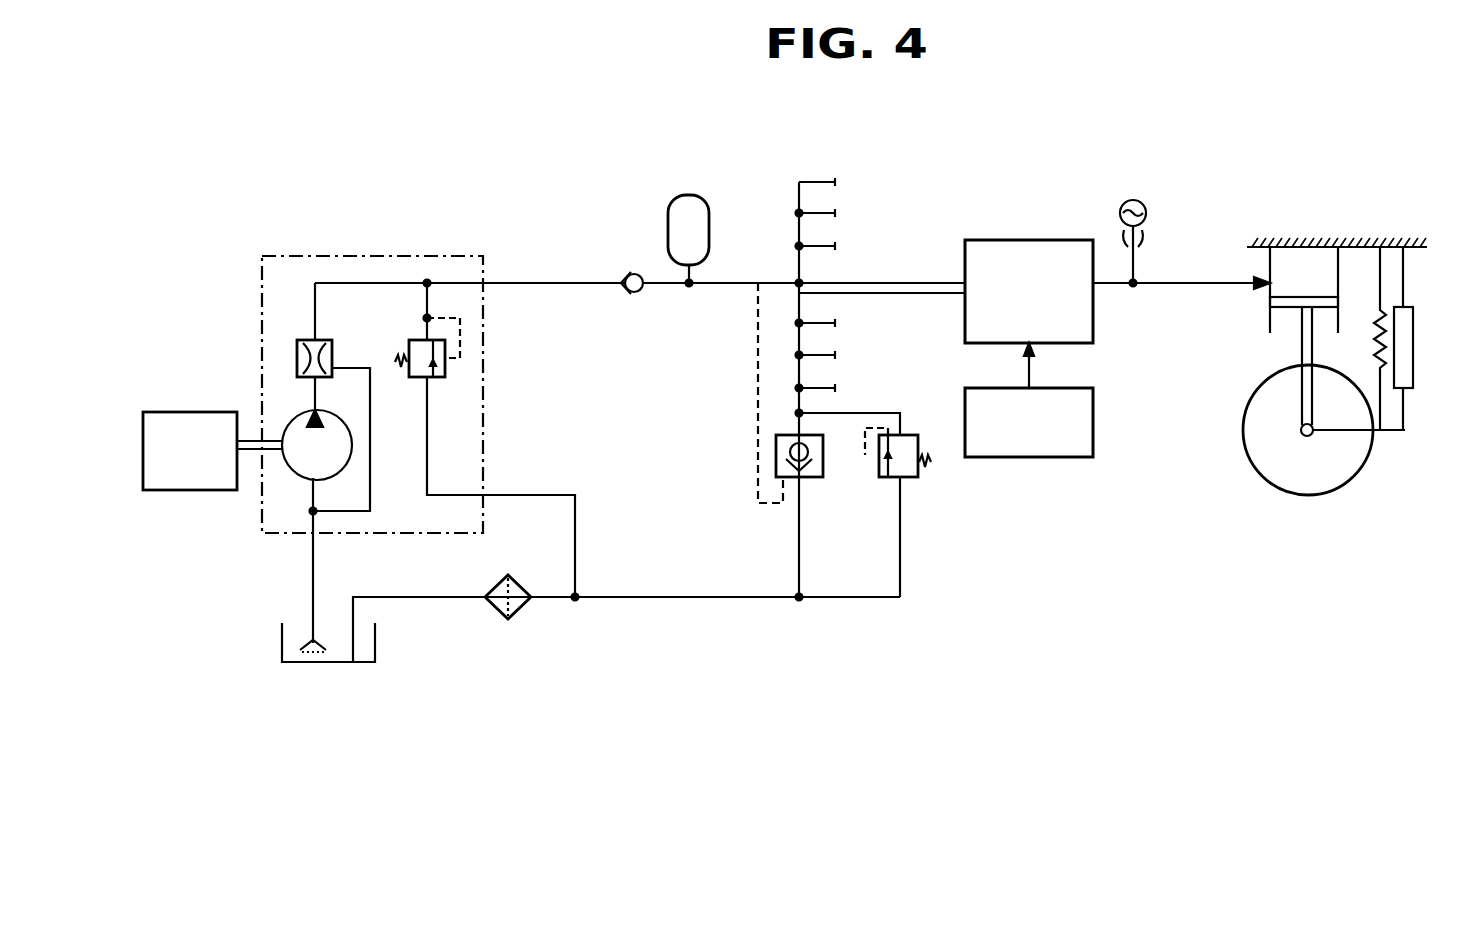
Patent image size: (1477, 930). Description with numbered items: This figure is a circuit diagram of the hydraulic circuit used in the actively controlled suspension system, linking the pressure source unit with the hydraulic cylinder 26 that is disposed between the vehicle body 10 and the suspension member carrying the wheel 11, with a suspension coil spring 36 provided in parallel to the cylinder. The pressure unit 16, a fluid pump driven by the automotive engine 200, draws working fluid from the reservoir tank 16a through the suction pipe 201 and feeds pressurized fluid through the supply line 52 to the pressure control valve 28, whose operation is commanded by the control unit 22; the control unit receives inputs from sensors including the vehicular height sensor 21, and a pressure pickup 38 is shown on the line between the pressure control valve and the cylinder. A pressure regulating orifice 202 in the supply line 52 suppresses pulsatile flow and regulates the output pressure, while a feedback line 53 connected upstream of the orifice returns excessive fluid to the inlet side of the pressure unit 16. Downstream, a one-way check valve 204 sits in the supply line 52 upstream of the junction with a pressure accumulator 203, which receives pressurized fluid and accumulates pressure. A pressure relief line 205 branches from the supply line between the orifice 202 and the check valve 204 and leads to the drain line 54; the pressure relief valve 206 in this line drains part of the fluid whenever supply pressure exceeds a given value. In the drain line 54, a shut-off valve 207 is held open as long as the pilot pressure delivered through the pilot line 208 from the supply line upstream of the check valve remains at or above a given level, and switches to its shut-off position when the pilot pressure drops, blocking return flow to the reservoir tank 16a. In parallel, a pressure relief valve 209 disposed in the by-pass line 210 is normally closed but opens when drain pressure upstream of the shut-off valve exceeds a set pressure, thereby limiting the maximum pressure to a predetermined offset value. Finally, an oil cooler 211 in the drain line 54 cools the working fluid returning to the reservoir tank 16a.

The vehicle body 10 is at (1342, 238).
The wheel 11 is at (1307, 494).
The pressure unit 16 is at (285, 482).
The reservoir tank 16a is at (282, 640).
The vehicular height sensor 21 is at (1413, 325).
The control unit 22 is at (965, 401).
The hydraulic cylinder 26 is at (1270, 295).
The pressure control valve 28 is at (1021, 240).
The suspension coil spring 36 is at (1384, 350).
The pressure gauge line 38 is at (1121, 285).
The supply line 52 is at (521, 283).
The feedback line 53 is at (370, 407).
The drain line 54 is at (720, 598).
The automotive engine 200 is at (190, 412).
The suction pipe 201 is at (313, 577).
The pressure regulating orifice 202 is at (297, 350).
The pressure accumulator 203 is at (707, 216).
The one-way check valve 204 is at (628, 275).
The pressure relief line 205 is at (430, 452).
The pressure relief valve 206 is at (446, 370).
The shut-off valve 207 is at (776, 468).
The pilot line 208 is at (758, 413).
The pressure relief valve 209 is at (910, 480).
The by-pass line 210 is at (900, 537).
The oil cooler 211 is at (518, 608).